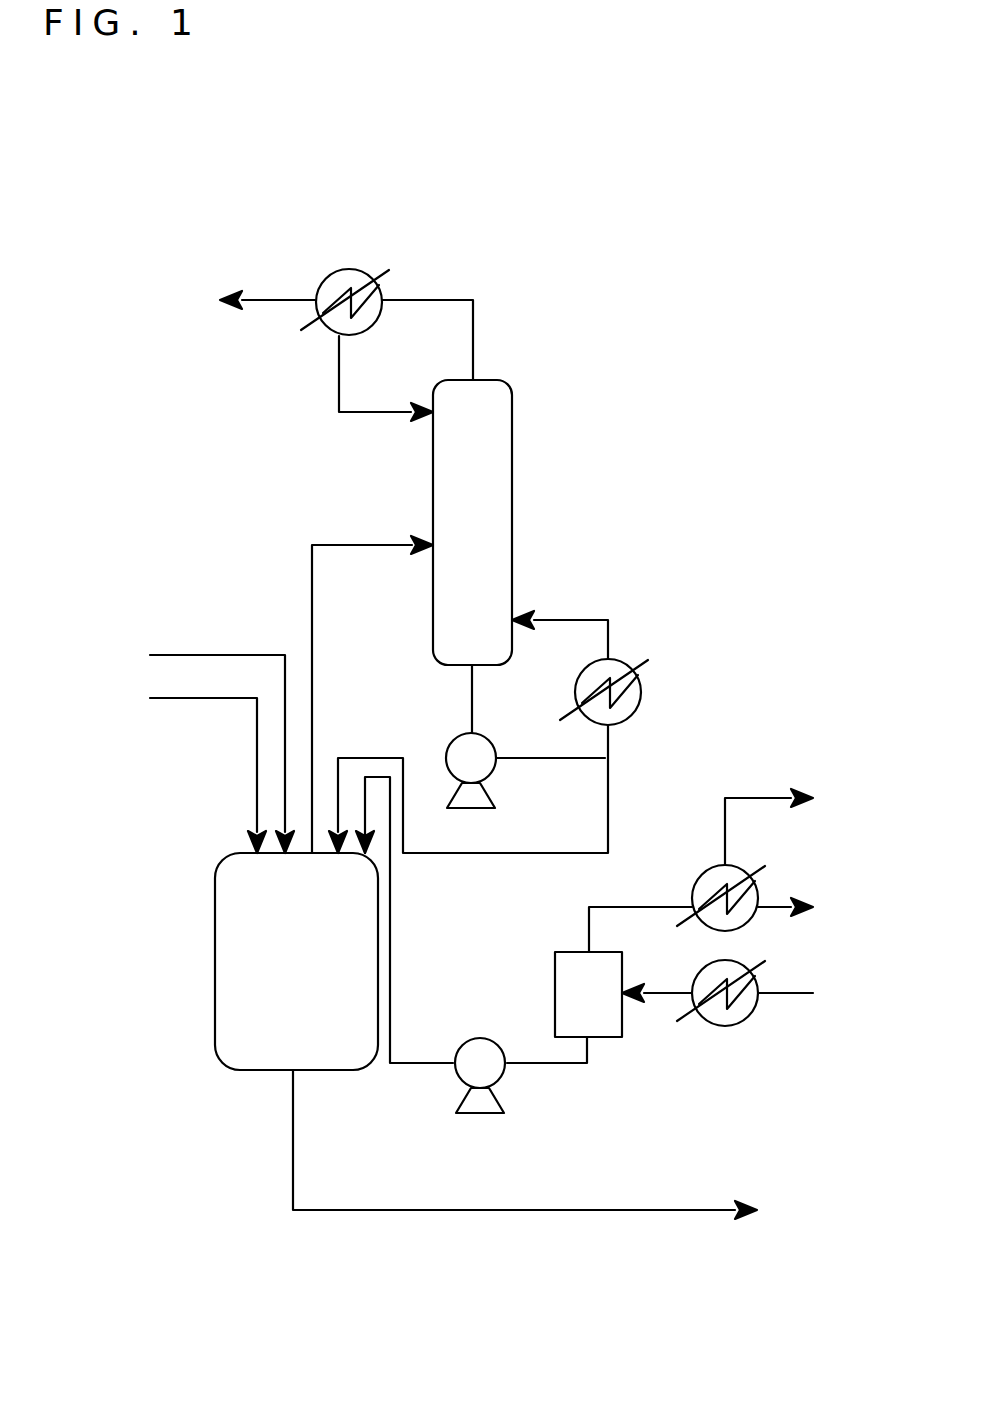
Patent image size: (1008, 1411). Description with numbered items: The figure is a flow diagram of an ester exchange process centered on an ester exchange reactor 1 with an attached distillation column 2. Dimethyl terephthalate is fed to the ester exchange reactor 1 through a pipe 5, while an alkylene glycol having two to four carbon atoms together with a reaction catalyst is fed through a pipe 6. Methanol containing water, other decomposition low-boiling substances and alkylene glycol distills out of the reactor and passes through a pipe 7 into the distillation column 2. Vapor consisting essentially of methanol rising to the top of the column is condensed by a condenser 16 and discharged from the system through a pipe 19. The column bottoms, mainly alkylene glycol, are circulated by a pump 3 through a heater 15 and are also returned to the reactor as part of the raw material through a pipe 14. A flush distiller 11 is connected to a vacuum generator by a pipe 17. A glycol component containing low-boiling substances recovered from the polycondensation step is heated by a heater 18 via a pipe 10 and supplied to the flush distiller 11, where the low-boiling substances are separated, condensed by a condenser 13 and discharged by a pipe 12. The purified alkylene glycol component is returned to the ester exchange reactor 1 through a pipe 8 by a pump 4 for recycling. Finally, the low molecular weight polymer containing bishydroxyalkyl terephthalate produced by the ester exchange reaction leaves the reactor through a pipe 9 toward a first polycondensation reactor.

The ester exchange reactor 1 is at (215, 940).
The distillation column 2 is at (433, 480).
The pump 3 is at (443, 757).
The pump 4 is at (510, 1075).
The pipe 5 is at (230, 655).
The pipe 6 is at (230, 698).
The pipe 7 is at (318, 618).
The pipe 8 is at (437, 1067).
The pipe 9 is at (680, 1210).
The pipe 10 is at (773, 1000).
The flush distiller 11 is at (555, 985).
The pipe 12 is at (773, 912).
The condenser 13 is at (700, 870).
The pipe 14 is at (500, 853).
The heater 15 is at (630, 662).
The condenser 16 is at (327, 327).
The pipe 17 is at (765, 797).
The heater 18 is at (708, 1033).
The pipe 19 is at (292, 300).